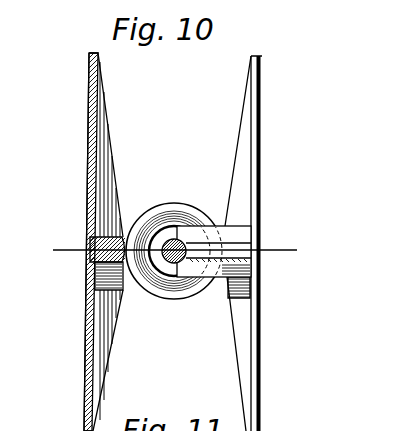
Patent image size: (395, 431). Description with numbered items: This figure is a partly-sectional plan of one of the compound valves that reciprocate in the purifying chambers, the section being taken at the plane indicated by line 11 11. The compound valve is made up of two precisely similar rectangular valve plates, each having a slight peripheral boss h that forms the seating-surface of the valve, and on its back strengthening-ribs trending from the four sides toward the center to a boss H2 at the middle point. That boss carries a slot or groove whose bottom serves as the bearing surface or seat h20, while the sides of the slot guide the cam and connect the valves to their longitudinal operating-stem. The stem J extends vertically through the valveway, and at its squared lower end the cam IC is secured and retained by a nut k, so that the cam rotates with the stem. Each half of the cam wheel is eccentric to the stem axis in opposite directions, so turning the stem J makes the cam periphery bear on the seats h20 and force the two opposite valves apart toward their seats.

The cam IC is at (250, 358).
The peripheral boss h is at (89, 62).
The bearing surface or seat h20 is at (95, 254).
The boss H2 is at (95, 266).
The nut k is at (183, 286).
The valve-stem J is at (178, 226).
The section line 11 is at (177, 246).